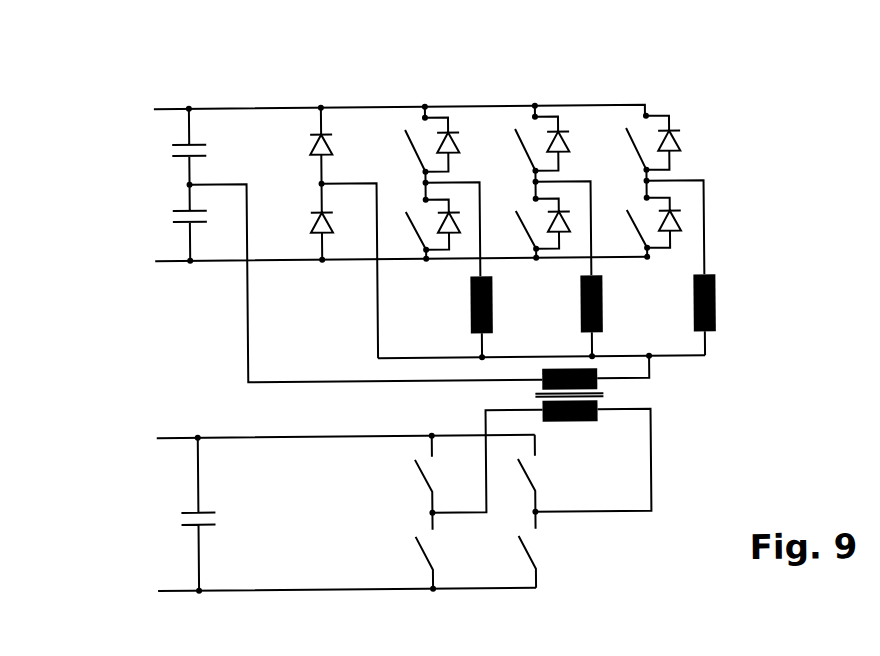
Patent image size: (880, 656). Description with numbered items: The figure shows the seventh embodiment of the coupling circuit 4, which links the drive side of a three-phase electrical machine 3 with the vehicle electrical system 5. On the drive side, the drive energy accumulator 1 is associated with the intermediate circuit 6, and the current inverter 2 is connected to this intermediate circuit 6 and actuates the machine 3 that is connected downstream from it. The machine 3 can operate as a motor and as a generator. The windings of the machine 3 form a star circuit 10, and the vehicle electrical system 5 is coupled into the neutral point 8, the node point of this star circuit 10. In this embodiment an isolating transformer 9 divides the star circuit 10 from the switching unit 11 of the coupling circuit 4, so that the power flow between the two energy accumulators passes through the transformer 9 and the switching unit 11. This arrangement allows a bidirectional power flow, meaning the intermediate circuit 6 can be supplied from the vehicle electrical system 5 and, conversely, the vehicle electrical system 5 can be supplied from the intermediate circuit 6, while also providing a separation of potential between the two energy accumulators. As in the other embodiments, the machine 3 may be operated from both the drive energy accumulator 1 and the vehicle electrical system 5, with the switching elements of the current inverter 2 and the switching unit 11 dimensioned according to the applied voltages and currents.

The drive energy accumulator 1 is at (105, 220).
The current inverter 2 is at (587, 82).
The three-phase electrical machine 3 is at (744, 328).
The coupling circuit 4 is at (219, 414).
The vehicle electrical system 5 is at (115, 516).
The intermediate circuit 6 is at (149, 144).
The neutral point 8 is at (667, 374).
The isolating transformer 9 is at (585, 422).
The star circuit 10 is at (705, 353).
The switching unit 11 is at (501, 611).